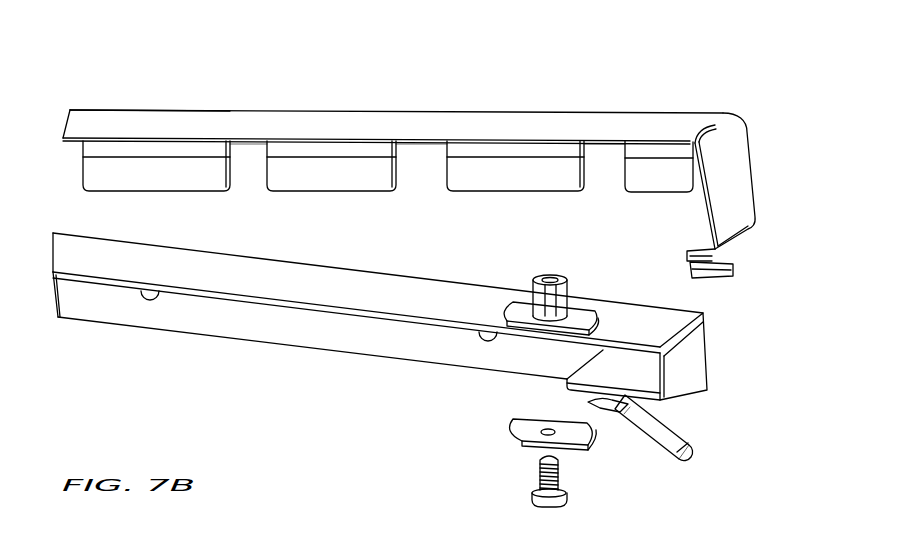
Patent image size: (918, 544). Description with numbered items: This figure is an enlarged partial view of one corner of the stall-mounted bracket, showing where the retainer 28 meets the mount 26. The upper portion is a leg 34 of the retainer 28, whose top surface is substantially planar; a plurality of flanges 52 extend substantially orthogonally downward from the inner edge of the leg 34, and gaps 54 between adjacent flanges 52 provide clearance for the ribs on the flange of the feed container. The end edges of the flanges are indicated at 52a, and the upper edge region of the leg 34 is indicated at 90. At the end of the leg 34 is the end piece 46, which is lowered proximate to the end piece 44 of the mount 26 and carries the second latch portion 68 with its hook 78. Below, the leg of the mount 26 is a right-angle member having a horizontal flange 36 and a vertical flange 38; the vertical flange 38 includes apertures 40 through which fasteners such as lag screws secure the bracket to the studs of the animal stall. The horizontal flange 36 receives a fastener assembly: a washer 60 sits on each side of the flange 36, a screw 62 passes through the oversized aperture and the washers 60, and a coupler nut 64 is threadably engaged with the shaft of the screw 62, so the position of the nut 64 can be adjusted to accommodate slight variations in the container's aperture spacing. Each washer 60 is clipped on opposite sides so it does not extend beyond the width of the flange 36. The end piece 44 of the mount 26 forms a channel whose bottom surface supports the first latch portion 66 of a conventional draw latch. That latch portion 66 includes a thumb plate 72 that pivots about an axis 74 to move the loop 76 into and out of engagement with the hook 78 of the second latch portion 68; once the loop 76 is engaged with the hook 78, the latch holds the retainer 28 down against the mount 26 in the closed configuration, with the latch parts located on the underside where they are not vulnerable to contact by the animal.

The mount 26 is at (310, 278).
The retainer 28 is at (486, 104).
The leg 34 is at (355, 115).
The horizontal flange 36 is at (353, 297).
The vertical flange 38 is at (333, 342).
The apertures 40 is at (148, 300).
The end piece 44 is at (710, 344).
The end piece 46 is at (738, 187).
The flanges 52 is at (138, 172).
The tab fold portions 52a is at (188, 192).
The gaps 54 is at (252, 168).
The washer 60 is at (583, 315).
The screw 62 is at (558, 470).
The coupler nut 64 is at (557, 292).
The first latch portion 66 is at (630, 422).
The second latch portion 68 is at (722, 276).
The thumb plate 72 is at (597, 400).
The axis 74 is at (657, 403).
The loop 76 is at (682, 452).
The hook 78 is at (736, 265).
The clip top edge 90 is at (182, 122).